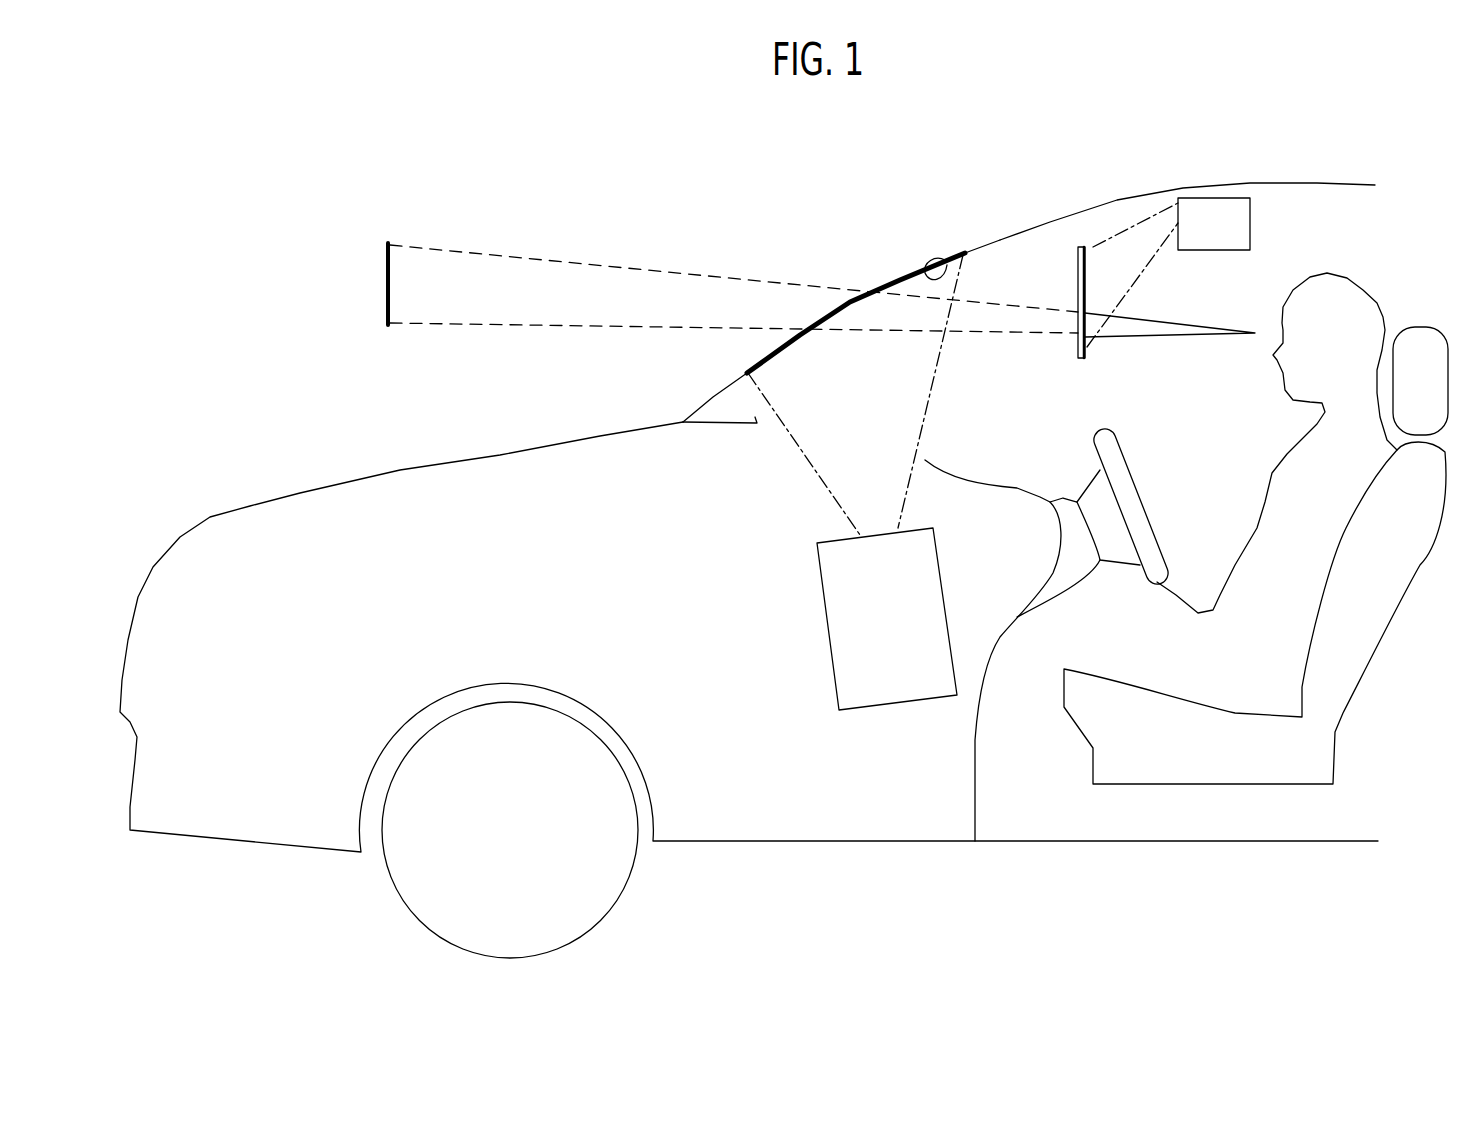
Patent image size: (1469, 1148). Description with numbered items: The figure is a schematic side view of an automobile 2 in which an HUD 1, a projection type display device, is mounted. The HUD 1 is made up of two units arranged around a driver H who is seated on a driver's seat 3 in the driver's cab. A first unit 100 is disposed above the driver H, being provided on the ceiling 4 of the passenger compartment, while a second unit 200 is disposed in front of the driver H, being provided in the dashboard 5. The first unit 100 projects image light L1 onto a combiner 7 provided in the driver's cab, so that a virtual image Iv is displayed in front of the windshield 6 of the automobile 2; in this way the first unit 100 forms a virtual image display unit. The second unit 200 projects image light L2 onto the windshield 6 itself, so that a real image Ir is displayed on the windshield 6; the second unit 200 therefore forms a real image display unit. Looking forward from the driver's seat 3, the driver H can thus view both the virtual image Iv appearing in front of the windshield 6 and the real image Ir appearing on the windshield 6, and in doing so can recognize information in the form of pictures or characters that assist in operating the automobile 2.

The HUD 1 is at (798, 624).
The automobile 2 is at (300, 497).
The driver's seat 3 is at (1335, 747).
The ceiling 4 is at (1298, 185).
The dashboard 5 is at (1015, 483).
The windshield 6 is at (995, 240).
The combiner 7 is at (1080, 265).
The first unit 100 is at (1228, 208).
The second unit 200 is at (935, 697).
The real image Ir is at (947, 265).
The virtual image Iv is at (388, 280).
The image light L1 is at (1143, 270).
The image light L2 is at (930, 396).
The driver H is at (1365, 292).